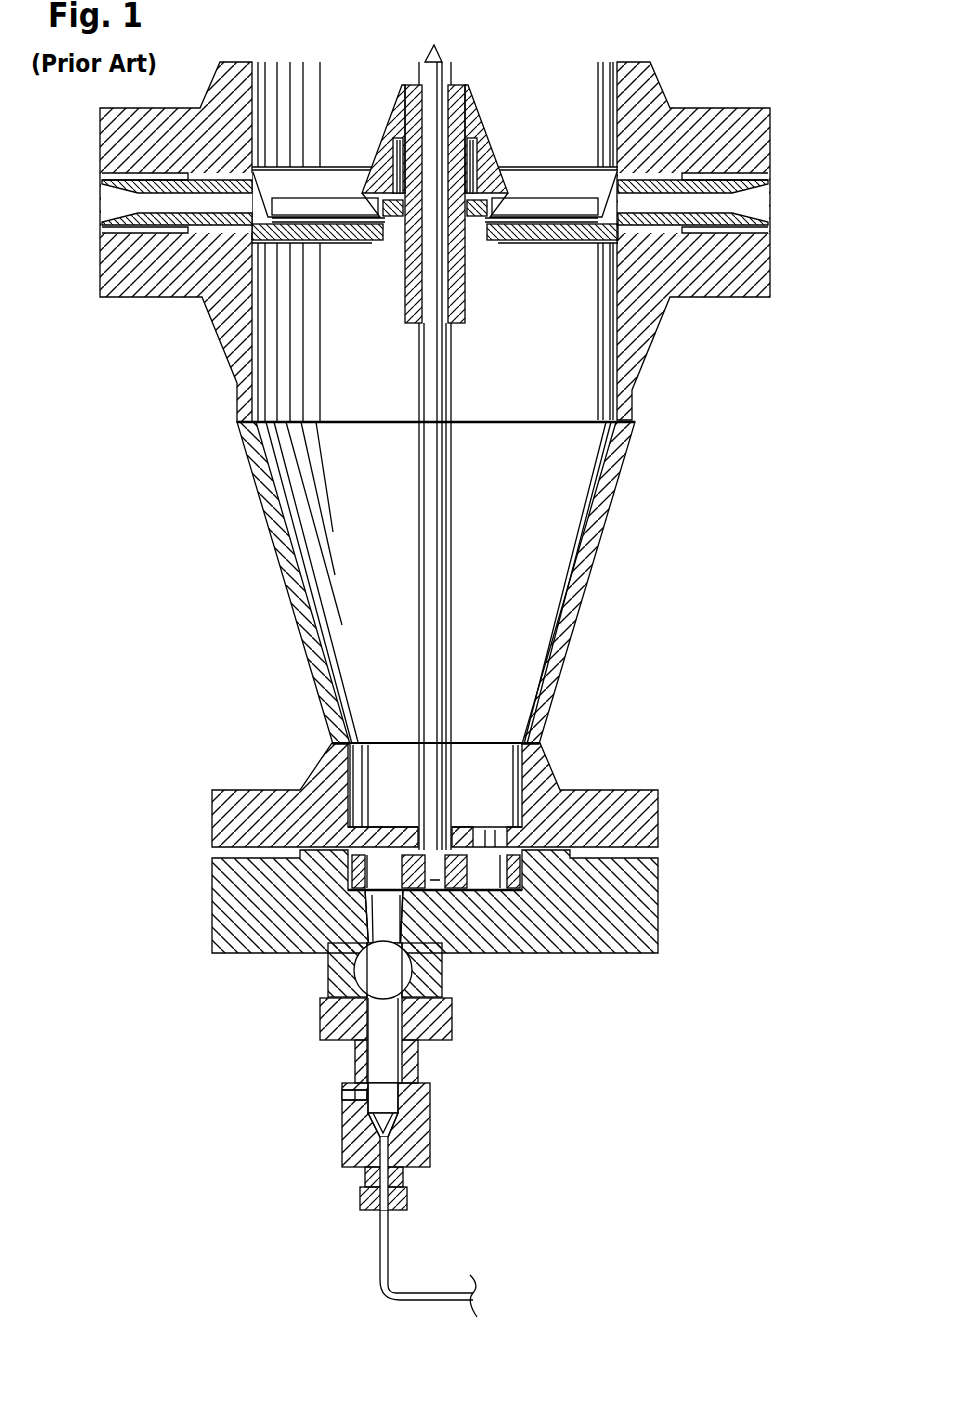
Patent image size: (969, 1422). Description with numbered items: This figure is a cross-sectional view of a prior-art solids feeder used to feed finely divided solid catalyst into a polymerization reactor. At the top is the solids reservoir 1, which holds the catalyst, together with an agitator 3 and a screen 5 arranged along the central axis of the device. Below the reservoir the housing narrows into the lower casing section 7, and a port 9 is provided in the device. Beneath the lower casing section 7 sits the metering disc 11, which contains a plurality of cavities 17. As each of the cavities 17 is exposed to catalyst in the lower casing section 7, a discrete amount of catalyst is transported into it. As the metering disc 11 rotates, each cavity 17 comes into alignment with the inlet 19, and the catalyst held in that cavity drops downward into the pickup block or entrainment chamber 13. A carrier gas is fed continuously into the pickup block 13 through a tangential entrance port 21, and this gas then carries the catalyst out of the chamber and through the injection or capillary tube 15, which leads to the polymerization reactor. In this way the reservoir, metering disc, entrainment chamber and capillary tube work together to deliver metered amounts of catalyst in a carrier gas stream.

The solids reservoir 1 is at (553, 78).
The agitator 3 is at (413, 80).
The screen 5 is at (323, 228).
The lower casing section 7 is at (535, 577).
The port 9 is at (490, 837).
The metering disc 11 is at (483, 882).
The pickup block or entrainment chamber 13 is at (380, 1060).
The injection or capillary tube 15 is at (392, 1243).
The cavities 17 is at (484, 892).
The inlet 19 is at (383, 915).
The tangential entrance port 21 is at (350, 1098).